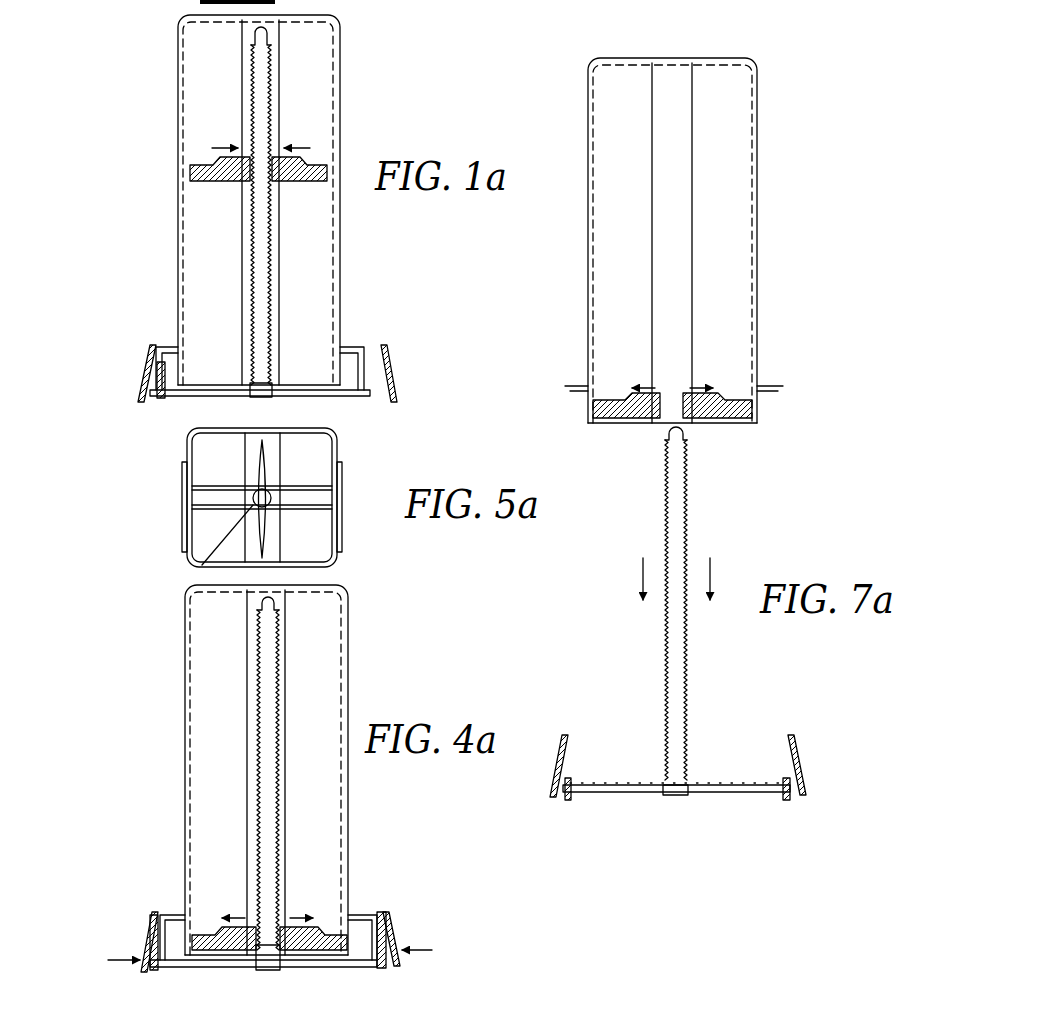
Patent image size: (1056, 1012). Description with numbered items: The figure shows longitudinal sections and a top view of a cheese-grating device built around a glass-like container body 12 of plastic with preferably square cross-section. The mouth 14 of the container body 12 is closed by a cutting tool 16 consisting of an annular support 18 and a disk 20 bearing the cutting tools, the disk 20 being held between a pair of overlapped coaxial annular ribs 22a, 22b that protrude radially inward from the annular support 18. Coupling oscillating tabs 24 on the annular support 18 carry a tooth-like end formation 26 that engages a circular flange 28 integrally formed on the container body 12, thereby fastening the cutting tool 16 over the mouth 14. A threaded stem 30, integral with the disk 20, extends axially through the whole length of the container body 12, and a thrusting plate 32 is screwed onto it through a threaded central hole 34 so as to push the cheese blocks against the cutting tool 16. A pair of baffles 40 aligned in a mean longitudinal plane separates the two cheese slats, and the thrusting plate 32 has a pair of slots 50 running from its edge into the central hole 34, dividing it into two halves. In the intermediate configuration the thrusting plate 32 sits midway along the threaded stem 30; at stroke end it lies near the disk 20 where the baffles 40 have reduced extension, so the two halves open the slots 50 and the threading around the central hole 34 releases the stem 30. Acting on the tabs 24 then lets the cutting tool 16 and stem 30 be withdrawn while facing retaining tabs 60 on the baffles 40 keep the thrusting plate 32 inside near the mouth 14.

In FIG. 1A, the glass-like container body 12 is at (340, 88).
In FIG. 5A, the glass-like container body 12 is at (340, 480).
In FIG. 4A, the glass-like container body 12 is at (348, 646).
In FIG. 7A, the glass-like container body 12 is at (757, 72).
In FIG. 1A, the mouth 14 is at (226, 380).
In FIG. 7A, the mouth 14 is at (702, 454).
In FIG. 5A, the cutting tool 16 is at (397, 441).
In FIG. 4A, the cutting tool 16 is at (312, 972).
In FIG. 7A, the cutting tool 16 is at (685, 800).
In FIG. 1A, the annular support 18 is at (366, 362).
In FIG. 4A, the annular support 18 is at (378, 915).
In FIG. 7A, the annular support 18 is at (770, 780).
In FIG. 1A, the disk 20 is at (170, 398).
In FIG. 4A, the disk 20 is at (226, 966).
In FIG. 7A, the disk 20 is at (725, 792).
In FIG. 1A, the annular rib 22a is at (143, 372).
In FIG. 7A, the annular rib 22a is at (582, 785).
In FIG. 1A, the annular rib 22b is at (158, 400).
In FIG. 7A, the annular rib 22b is at (570, 797).
In FIG. 1A, the coupling oscillating tab 24 is at (395, 392).
In FIG. 4A, the coupling oscillating tab 24 is at (145, 920).
In FIG. 7A, the coupling oscillating tab 24 is at (806, 760).
In FIG. 1A, the tooth-like end formation 26 is at (385, 350).
In FIG. 7A, the tooth-like end formation 26 is at (566, 735).
In FIG. 1A, the circular flange 28 is at (157, 345).
In FIG. 4A, the circular flange 28 is at (175, 915).
In FIG. 7A, the circular flange 28 is at (787, 392).
In FIG. 1A, the threaded stem 30 is at (268, 275).
In FIG. 4A, the threaded stem 30 is at (270, 690).
In FIG. 7A, the threaded stem 30 is at (668, 540).
In FIG. 1A, the thrusting plate 32 is at (318, 150).
In FIG. 5A, the thrusting plate 32 is at (183, 454).
In FIG. 4A, the thrusting plate 32 is at (331, 924).
In FIG. 7A, the thrusting plate 32 is at (733, 392).
In FIG. 5A, the threaded central hole 34 is at (206, 566).
In FIG. 4A, the threaded central hole 34 is at (271, 934).
In FIG. 7A, the threaded central hole 34 is at (685, 400).
In FIG. 1A, the baffles 40 is at (215, 85).
In FIG. 5A, the baffles 40 is at (318, 520).
In FIG. 7A, the baffles 40 is at (612, 128).
In FIG. 5A, the slots 50 is at (272, 470).
In FIG. 1A, the retaining tabs 60 is at (235, 386).
In FIG. 7A, the retaining tabs 60 is at (657, 420).